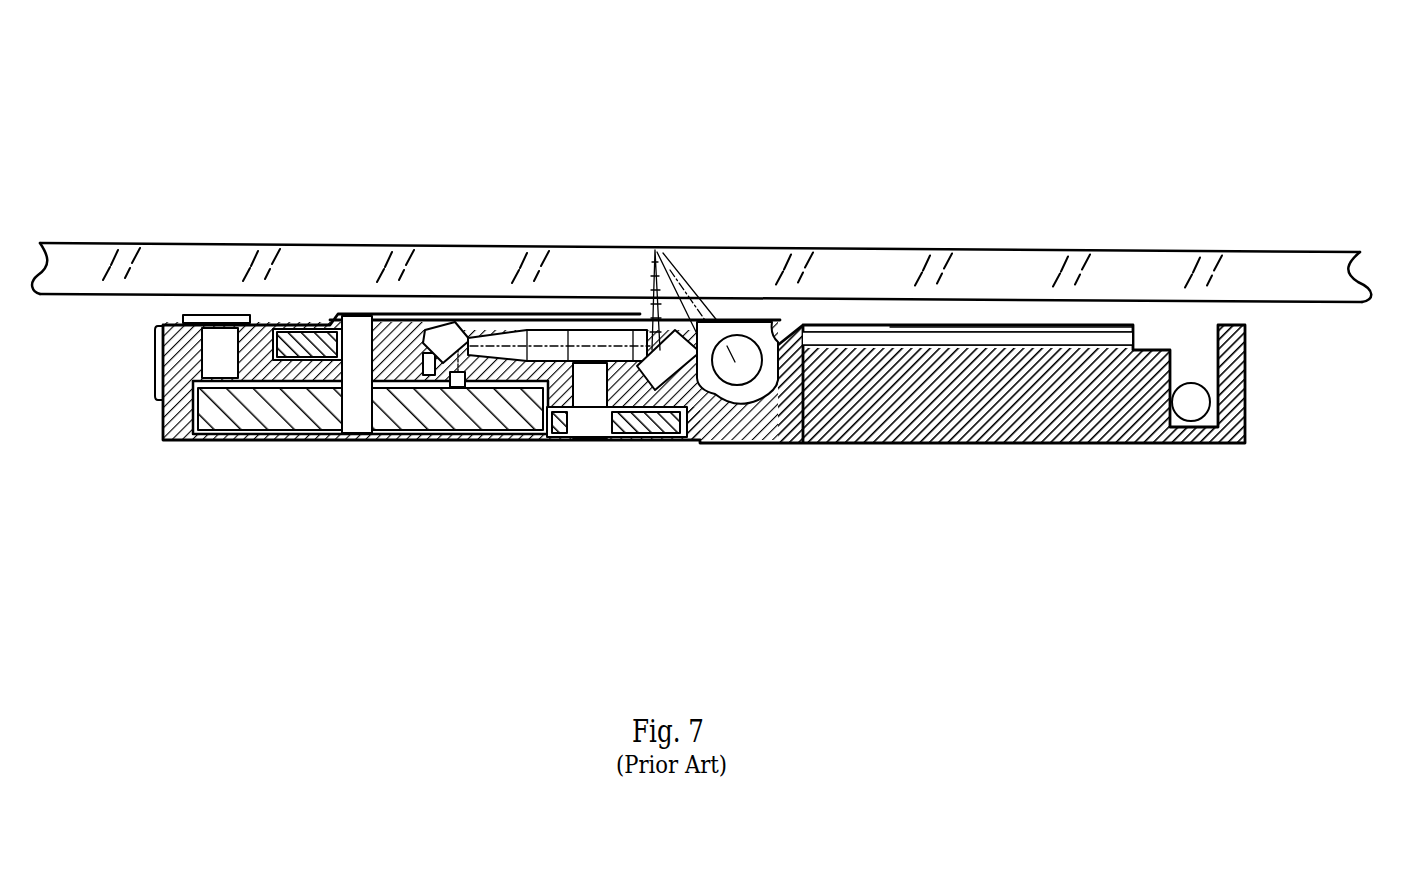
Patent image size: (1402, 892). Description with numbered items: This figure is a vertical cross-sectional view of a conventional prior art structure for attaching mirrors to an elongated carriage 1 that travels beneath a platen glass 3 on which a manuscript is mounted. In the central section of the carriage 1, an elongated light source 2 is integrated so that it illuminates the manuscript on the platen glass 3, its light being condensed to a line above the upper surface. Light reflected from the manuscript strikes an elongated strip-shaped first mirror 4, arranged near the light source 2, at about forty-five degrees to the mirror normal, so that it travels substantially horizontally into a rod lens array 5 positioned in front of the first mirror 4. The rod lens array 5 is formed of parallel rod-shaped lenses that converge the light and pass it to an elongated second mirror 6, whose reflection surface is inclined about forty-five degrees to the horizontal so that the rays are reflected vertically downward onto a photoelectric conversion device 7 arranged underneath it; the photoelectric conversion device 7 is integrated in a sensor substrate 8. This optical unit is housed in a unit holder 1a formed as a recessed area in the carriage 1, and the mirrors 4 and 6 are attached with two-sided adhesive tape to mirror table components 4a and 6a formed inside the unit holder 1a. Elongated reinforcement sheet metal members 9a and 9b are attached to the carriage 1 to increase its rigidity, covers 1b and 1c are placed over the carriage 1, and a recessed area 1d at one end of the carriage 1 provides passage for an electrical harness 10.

The carriage 1 is at (965, 446).
The unit holder 1a is at (517, 328).
The cover 1b is at (425, 332).
The cover 1c is at (958, 340).
The recessed area 1d is at (1198, 368).
The light source 2 is at (743, 333).
The platen glass 3 is at (1150, 263).
The first mirror 4 is at (700, 348).
The mirror table component 4a is at (697, 443).
The rod lens array 5 is at (593, 333).
The second mirror 6 is at (485, 333).
The mirror table component 6a is at (447, 332).
The photoelectric conversion device 7 is at (483, 440).
The sensor substrate 8 is at (396, 440).
The reinforcement sheet metal member 9a is at (655, 447).
The reinforcement sheet metal member 9b is at (295, 327).
The electrical harness 10 is at (1192, 418).